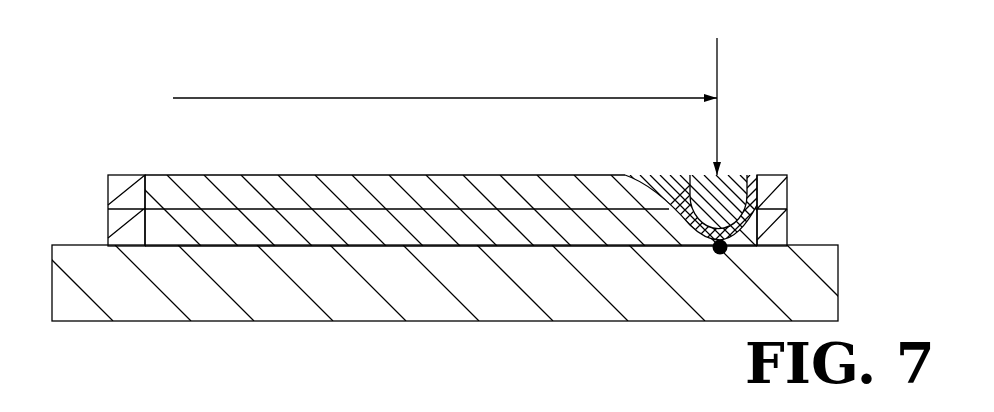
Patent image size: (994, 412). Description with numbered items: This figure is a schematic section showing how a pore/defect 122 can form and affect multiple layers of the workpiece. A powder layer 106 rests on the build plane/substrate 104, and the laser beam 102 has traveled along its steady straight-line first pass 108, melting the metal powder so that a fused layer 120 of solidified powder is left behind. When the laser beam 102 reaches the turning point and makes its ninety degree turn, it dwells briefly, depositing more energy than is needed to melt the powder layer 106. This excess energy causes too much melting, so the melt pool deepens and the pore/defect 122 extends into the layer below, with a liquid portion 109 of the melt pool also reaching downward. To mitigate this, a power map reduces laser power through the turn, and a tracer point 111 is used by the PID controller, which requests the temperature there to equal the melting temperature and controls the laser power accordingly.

The laser beam 102 is at (720, 78).
The build plane/substrate 104 is at (432, 324).
The powder layer 106 is at (105, 188).
The first pass 108 is at (467, 97).
The liquid portion 109 is at (668, 172).
The tracer point 111 is at (720, 255).
The fused layer 120 is at (300, 173).
The pore/defect 122 is at (733, 178).